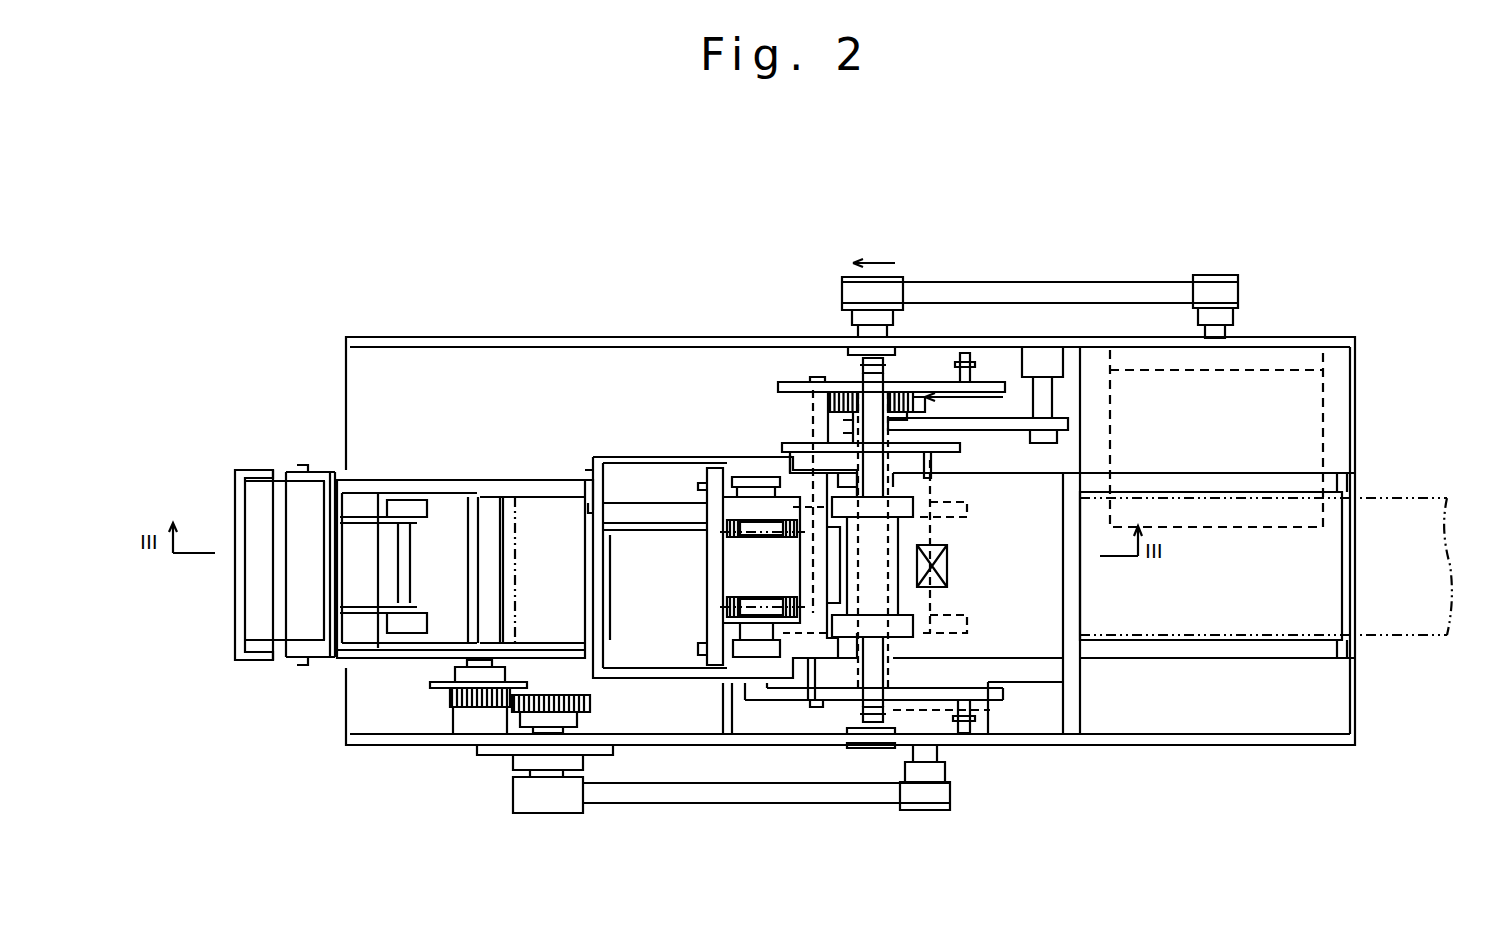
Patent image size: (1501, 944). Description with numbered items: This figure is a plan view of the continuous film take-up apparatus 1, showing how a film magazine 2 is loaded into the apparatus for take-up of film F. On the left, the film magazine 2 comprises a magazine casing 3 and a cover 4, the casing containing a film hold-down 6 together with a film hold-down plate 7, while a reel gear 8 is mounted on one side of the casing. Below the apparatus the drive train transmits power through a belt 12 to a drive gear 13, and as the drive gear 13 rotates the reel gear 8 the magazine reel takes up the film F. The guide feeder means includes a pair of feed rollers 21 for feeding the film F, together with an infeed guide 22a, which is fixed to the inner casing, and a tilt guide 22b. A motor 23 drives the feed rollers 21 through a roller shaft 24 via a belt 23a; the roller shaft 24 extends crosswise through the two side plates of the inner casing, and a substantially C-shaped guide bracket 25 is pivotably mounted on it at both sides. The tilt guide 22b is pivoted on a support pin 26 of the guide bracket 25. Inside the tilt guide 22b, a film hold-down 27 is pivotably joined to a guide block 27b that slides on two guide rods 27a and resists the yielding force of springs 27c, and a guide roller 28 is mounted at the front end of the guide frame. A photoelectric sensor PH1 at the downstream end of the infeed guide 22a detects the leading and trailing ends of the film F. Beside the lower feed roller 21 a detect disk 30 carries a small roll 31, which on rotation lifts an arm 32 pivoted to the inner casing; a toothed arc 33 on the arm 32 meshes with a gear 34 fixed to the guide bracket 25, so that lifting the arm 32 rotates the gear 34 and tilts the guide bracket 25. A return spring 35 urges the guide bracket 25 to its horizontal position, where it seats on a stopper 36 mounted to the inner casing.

The continuous film take-up apparatus 1 is at (600, 314).
The film magazine 2 is at (258, 441).
The magazine casing 3 is at (330, 470).
The cover 4 is at (235, 500).
The film hold-down 6 is at (362, 519).
The film hold-down plate 7 is at (447, 503).
The reel gear 8 is at (450, 695).
The belt 12 is at (602, 795).
The drive gear 13 is at (550, 710).
The feed rollers 21 is at (970, 613).
The infeed guide 22a is at (1040, 655).
The tilt guide 22b is at (652, 680).
The motor 23 is at (1280, 357).
The belt 23a is at (1068, 290).
The roller shaft 24 is at (848, 375).
The guide bracket 25 is at (773, 700).
The support pin 26 is at (810, 700).
The film hold-down 27 is at (648, 503).
The guide rods 27a is at (628, 525).
The guide block 27b is at (708, 527).
The springs 27c is at (752, 480).
The guide roller 28 is at (488, 507).
The detect disk 30 is at (810, 428).
The small roll 31 is at (808, 393).
The arm 32 is at (1015, 428).
The toothed arc 33 is at (978, 413).
The gear 34 is at (902, 395).
The return spring 35 is at (970, 367).
The stopper 36 is at (1005, 357).
The film F is at (528, 507).
The photoelectric sensor PH1 is at (943, 568).